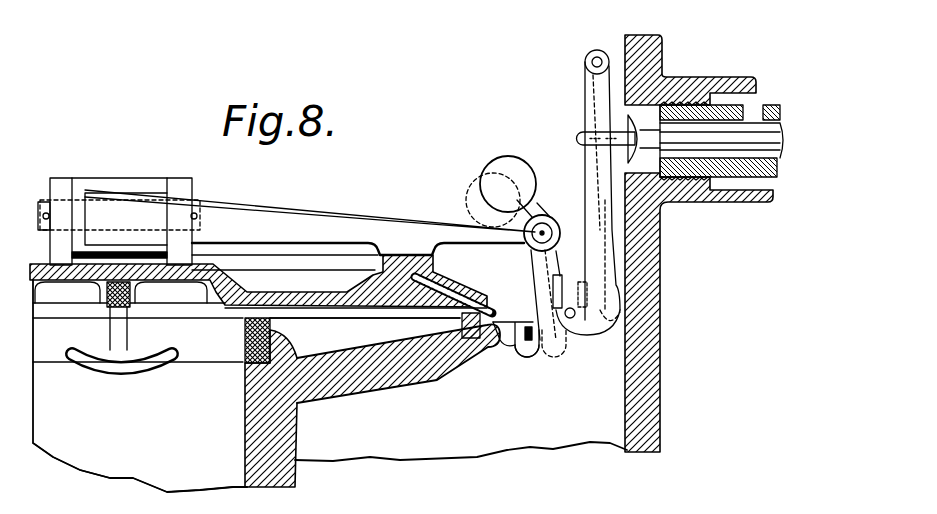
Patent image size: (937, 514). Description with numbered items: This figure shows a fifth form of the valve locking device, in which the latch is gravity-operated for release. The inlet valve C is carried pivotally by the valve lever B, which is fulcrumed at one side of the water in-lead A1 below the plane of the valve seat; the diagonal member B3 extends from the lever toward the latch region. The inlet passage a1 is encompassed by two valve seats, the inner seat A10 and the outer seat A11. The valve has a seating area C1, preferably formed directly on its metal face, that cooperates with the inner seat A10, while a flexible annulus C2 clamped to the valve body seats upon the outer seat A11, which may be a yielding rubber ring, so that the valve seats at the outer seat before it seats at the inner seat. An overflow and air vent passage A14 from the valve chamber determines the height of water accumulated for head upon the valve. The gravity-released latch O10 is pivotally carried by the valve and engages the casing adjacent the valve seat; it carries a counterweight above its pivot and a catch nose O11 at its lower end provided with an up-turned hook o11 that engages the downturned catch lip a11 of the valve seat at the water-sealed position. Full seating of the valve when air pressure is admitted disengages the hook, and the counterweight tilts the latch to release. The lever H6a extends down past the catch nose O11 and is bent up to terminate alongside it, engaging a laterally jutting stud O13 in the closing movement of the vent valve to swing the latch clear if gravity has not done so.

The valve lever B is at (108, 192).
The rod B3 is at (293, 214).
The inlet valve C is at (251, 291).
The seating area C1 is at (245, 317).
The flexible annulus C2 is at (457, 313).
The water in-lead A1 is at (267, 437).
The inner valve seat A10 is at (245, 333).
The outer valve seat A11 is at (460, 357).
The overflow and air vent passage A14 is at (705, 156).
The inlet passage a1 is at (140, 386).
The downturned catch lip a11 is at (527, 320).
The gravity-released latch O10 is at (533, 283).
The catch nose O11 is at (535, 358).
The up-turned hook o11 is at (510, 341).
The laterally jutting stud O13 is at (563, 252).
The lever H6a is at (588, 181).